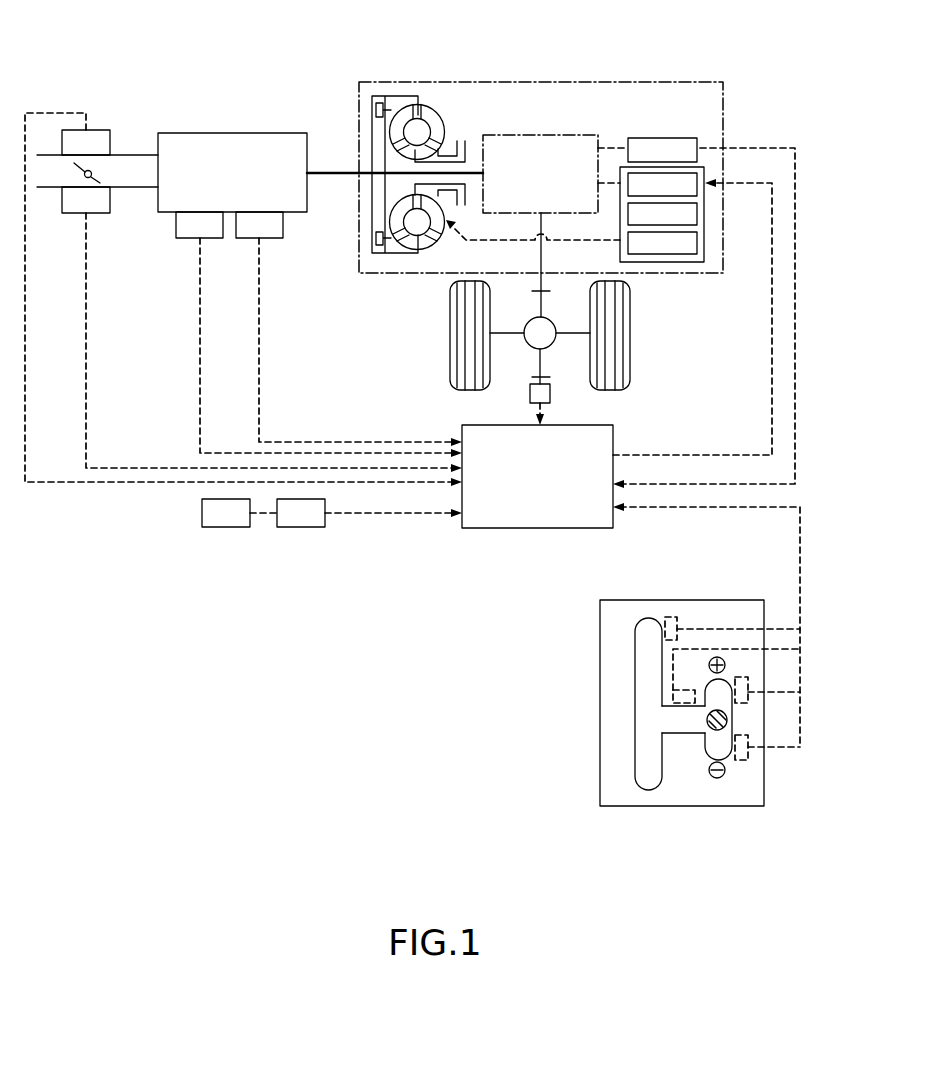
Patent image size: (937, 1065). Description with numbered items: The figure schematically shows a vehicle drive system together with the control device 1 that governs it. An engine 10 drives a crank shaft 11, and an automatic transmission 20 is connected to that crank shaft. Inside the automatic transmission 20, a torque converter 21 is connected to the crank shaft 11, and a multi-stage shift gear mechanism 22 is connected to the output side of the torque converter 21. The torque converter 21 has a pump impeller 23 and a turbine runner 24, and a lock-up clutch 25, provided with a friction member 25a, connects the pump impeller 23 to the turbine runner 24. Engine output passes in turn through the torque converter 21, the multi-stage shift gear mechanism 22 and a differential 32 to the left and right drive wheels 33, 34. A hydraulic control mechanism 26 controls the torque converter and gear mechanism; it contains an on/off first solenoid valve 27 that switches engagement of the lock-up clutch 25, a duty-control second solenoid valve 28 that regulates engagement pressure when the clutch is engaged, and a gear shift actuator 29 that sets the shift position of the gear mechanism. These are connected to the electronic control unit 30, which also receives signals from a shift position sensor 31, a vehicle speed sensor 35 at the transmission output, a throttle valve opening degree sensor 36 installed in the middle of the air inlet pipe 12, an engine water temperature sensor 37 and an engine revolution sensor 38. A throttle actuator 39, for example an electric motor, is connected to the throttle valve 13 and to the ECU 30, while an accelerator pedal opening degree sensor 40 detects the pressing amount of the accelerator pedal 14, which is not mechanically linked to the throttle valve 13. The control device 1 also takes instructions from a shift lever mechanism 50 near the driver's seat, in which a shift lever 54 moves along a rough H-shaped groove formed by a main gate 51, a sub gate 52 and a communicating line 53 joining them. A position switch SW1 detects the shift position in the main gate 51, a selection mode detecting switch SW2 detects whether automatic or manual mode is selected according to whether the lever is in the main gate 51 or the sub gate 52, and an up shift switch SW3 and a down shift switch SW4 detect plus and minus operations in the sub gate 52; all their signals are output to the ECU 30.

The control device 1 is at (420, 577).
The engine 10 is at (236, 133).
The crank shaft 11 is at (333, 170).
The air inlet pipe 12 is at (135, 155).
The throttle valve 13 is at (96, 178).
The accelerator pedal 14 is at (226, 527).
The automatic transmission 20 is at (644, 82).
The torque converter 21 is at (432, 106).
The multi-stage shift gear mechanism 22 is at (553, 135).
The pump impeller 23 is at (436, 120).
The turbine runner 24 is at (408, 112).
The lock-up clutch 25 is at (378, 96).
The friction member 25a is at (376, 108).
The hydraulic control mechanism 26 is at (685, 262).
The first solenoid valve 27 is at (697, 240).
The second solenoid valve 28 is at (697, 212).
The gear shift actuator 29 is at (697, 176).
The electronic control unit 30 is at (535, 528).
The shift position sensor 31 is at (680, 138).
The differential 32 is at (553, 346).
The left drive wheel 33 is at (450, 333).
The right drive wheel 34 is at (630, 333).
The vehicle speed sensor 35 is at (550, 394).
The throttle valve opening degree sensor 36 is at (100, 213).
The engine water temperature sensor 37 is at (214, 238).
The engine revolution sensor 38 is at (274, 238).
The throttle actuator 39 is at (98, 130).
The accelerator pedal opening degree sensor 40 is at (300, 527).
The shift lever mechanism 50 is at (590, 703).
The main gate 51 is at (645, 790).
The sub gate 52 is at (722, 750).
The communicating line 53 is at (683, 733).
The shift lever 54 is at (727, 722).
The position switch SW1 is at (673, 617).
The selection mode detecting switch SW2 is at (690, 688).
The up shift switch SW3 is at (750, 682).
The down shift switch SW4 is at (750, 757).